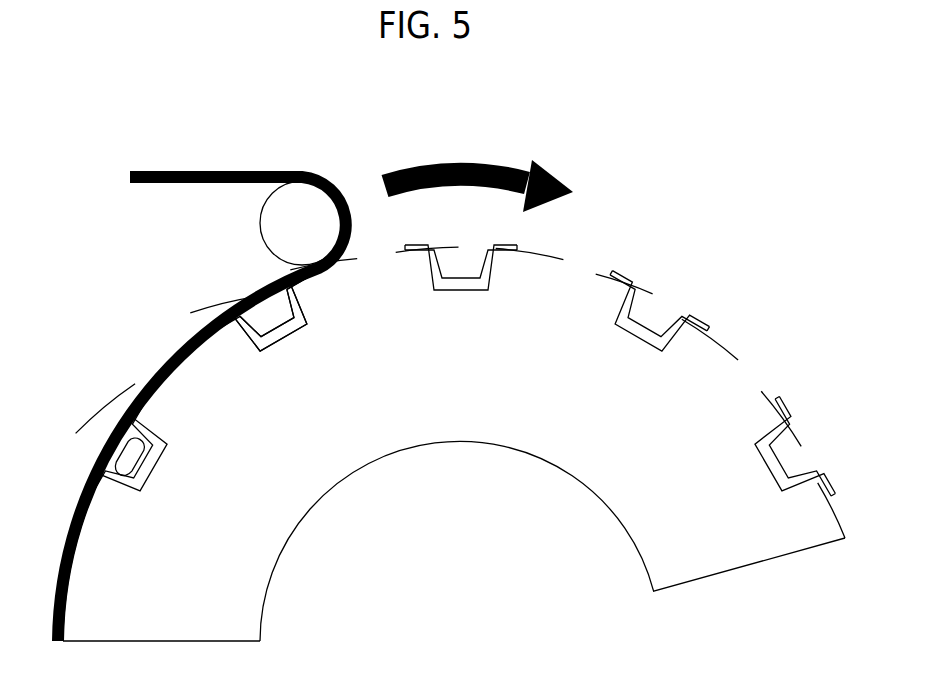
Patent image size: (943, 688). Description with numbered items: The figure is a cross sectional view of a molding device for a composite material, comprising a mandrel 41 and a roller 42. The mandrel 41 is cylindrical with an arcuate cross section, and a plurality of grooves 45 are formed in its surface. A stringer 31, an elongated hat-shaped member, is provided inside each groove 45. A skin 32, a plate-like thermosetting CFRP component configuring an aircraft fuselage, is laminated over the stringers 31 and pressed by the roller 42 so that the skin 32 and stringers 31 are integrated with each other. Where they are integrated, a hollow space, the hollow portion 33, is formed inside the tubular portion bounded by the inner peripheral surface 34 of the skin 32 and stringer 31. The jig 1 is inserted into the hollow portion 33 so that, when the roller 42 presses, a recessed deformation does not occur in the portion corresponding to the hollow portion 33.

The jig 1 is at (275, 312).
The stringer 31 is at (487, 275).
The skin 32 is at (200, 172).
The hollow portion 33 is at (157, 463).
The inner peripheral surface 34 is at (118, 458).
The mandrel 41 is at (580, 280).
The roller 42 is at (273, 220).
The groove 45 is at (283, 342).